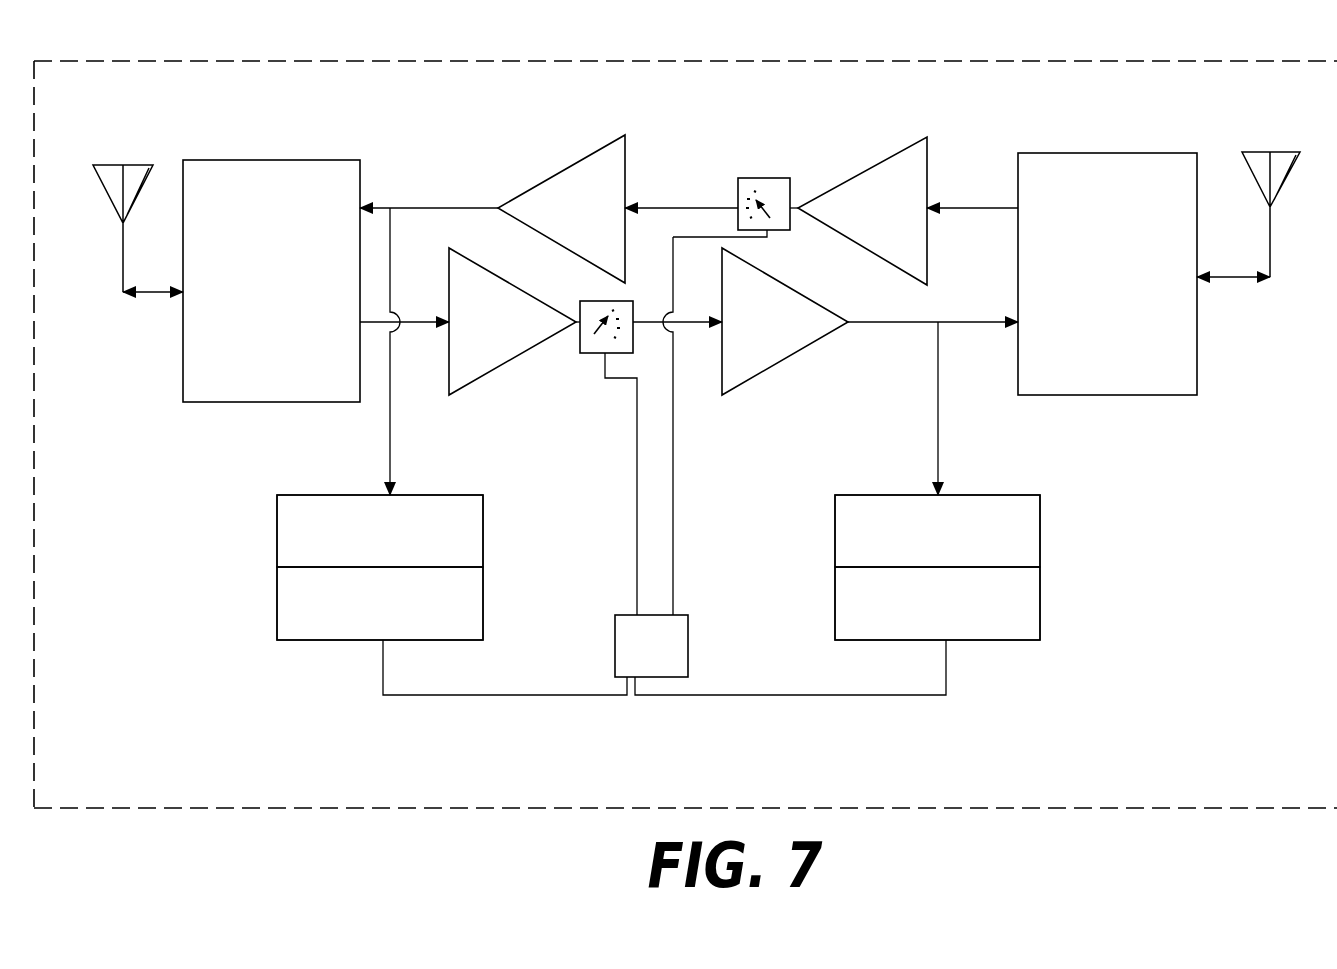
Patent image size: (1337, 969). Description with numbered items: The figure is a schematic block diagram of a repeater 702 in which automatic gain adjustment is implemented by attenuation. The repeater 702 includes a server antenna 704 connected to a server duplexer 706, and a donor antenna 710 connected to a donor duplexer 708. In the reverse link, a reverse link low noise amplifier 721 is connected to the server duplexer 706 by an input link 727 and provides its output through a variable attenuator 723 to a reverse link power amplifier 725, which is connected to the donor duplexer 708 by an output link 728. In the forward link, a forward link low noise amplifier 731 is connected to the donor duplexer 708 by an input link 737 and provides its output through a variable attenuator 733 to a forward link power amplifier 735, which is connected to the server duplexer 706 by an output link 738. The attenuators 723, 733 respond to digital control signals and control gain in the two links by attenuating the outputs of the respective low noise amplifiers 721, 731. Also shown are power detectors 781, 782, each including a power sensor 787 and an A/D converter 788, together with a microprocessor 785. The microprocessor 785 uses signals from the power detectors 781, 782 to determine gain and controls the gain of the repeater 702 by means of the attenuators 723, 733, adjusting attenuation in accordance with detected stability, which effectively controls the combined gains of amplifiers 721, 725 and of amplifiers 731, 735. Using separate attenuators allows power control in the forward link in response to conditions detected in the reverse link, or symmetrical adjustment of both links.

The repeater 702 is at (1180, 61).
The server antenna 704 is at (123, 264).
The server duplexer 706 is at (292, 160).
The donor duplexer 708 is at (1116, 153).
The donor antenna 710 is at (1271, 255).
The reverse link low noise amplifier 721 is at (518, 362).
The variable attenuator 723 is at (587, 355).
The reverse link power amplifier 725 is at (790, 358).
The input link 727 is at (412, 330).
The output link 728 is at (884, 322).
The forward link low noise amplifier 731 is at (870, 175).
The variable attenuator 733 is at (753, 178).
The forward link power amplifier 735 is at (572, 162).
The input link 737 is at (982, 208).
The output link 738 is at (418, 208).
The power detector 781 is at (1014, 485).
The power detector 782 is at (306, 488).
The microprocessor 785 is at (690, 650).
The power sensor 787 is at (485, 523).
The A/D converter 788 is at (485, 602).